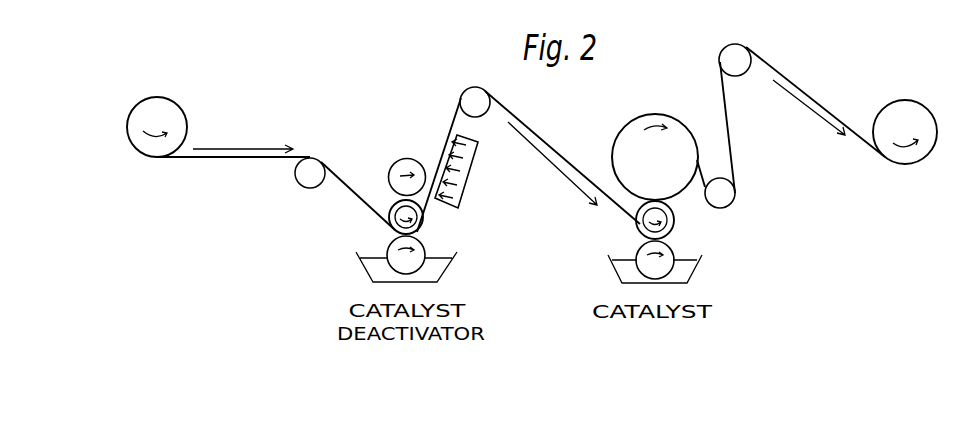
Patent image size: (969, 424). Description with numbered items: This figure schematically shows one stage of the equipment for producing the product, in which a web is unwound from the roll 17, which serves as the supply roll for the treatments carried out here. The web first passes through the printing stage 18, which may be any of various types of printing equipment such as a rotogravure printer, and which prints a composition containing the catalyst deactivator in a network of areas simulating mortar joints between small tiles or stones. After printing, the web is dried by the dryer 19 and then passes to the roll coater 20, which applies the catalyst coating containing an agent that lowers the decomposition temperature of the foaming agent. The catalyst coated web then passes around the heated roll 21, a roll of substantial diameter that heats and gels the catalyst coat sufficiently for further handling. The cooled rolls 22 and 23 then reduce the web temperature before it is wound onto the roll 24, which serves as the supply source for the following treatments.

The roll 17 is at (167, 110).
The printing stage 18 is at (439, 230).
The dryer 19 is at (470, 166).
The roll coater 20 is at (627, 236).
The heated roll 21 is at (647, 113).
The cooled roll 22 is at (723, 205).
The cooled roll 23 is at (730, 55).
The roll 24 is at (908, 110).